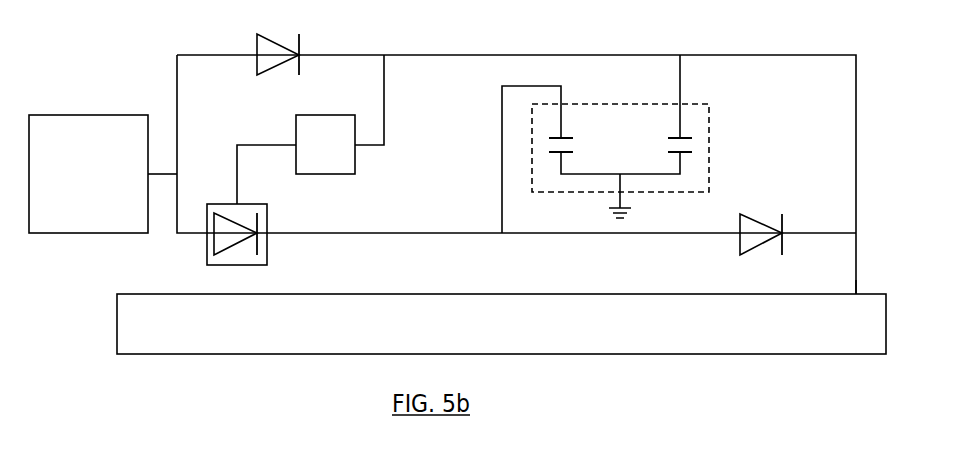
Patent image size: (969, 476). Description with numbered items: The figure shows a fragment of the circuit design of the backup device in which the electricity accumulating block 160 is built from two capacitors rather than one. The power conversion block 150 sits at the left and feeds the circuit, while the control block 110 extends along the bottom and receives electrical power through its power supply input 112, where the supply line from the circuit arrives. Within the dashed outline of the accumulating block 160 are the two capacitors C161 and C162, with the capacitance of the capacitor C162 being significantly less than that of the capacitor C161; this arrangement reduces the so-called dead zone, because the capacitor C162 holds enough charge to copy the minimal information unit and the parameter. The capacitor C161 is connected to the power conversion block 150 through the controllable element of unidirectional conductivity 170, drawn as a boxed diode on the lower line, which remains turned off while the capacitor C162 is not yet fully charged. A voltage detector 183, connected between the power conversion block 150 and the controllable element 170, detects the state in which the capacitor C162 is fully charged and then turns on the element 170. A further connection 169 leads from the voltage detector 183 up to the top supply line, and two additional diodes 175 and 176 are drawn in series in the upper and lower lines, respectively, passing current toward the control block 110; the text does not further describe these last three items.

The control block 110 is at (501, 324).
The power supply input 112 is at (857, 294).
The power conversion block 150 is at (88, 174).
The accumulating block 160 is at (685, 125).
The capacitor C161 is at (561, 137).
The capacitor C162 is at (680, 137).
The connection line 169 is at (384, 55).
The controllable element of unidirectional conductivity 170 is at (208, 248).
The diode 175 is at (258, 43).
The diode 176 is at (755, 222).
The voltage detector 183 is at (295, 132).